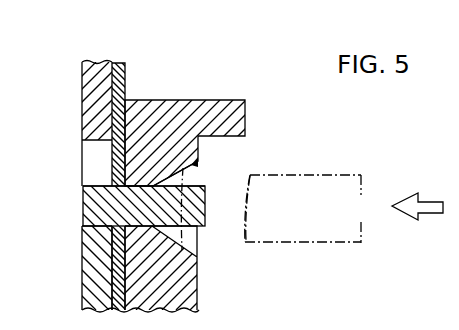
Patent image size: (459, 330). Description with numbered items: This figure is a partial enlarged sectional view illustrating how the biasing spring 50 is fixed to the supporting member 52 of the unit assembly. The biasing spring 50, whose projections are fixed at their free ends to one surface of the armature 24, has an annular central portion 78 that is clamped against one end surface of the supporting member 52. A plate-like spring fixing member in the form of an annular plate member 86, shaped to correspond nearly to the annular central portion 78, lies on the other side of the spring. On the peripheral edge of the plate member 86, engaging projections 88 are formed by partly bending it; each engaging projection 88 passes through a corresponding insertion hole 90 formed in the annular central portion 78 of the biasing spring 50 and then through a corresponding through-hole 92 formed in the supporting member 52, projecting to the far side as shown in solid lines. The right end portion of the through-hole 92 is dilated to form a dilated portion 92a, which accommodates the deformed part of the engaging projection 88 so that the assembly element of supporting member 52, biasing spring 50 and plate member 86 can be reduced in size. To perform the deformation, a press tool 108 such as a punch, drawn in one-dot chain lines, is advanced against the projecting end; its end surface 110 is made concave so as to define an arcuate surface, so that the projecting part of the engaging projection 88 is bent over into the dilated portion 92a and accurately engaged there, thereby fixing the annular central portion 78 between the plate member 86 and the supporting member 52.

The armature 24 is at (82, 95).
The biasing spring 50 is at (129, 84).
The supporting member 52 is at (198, 106).
The engaging projection 88 is at (126, 165).
The insertion hole 90 is at (135, 186).
The through-hole 92 is at (140, 198).
The dilated portion 92a is at (191, 167).
The plate member 86 is at (82, 270).
The annular central portion 78 is at (123, 300).
The end surface 110 is at (248, 224).
The press tool 108 is at (310, 244).